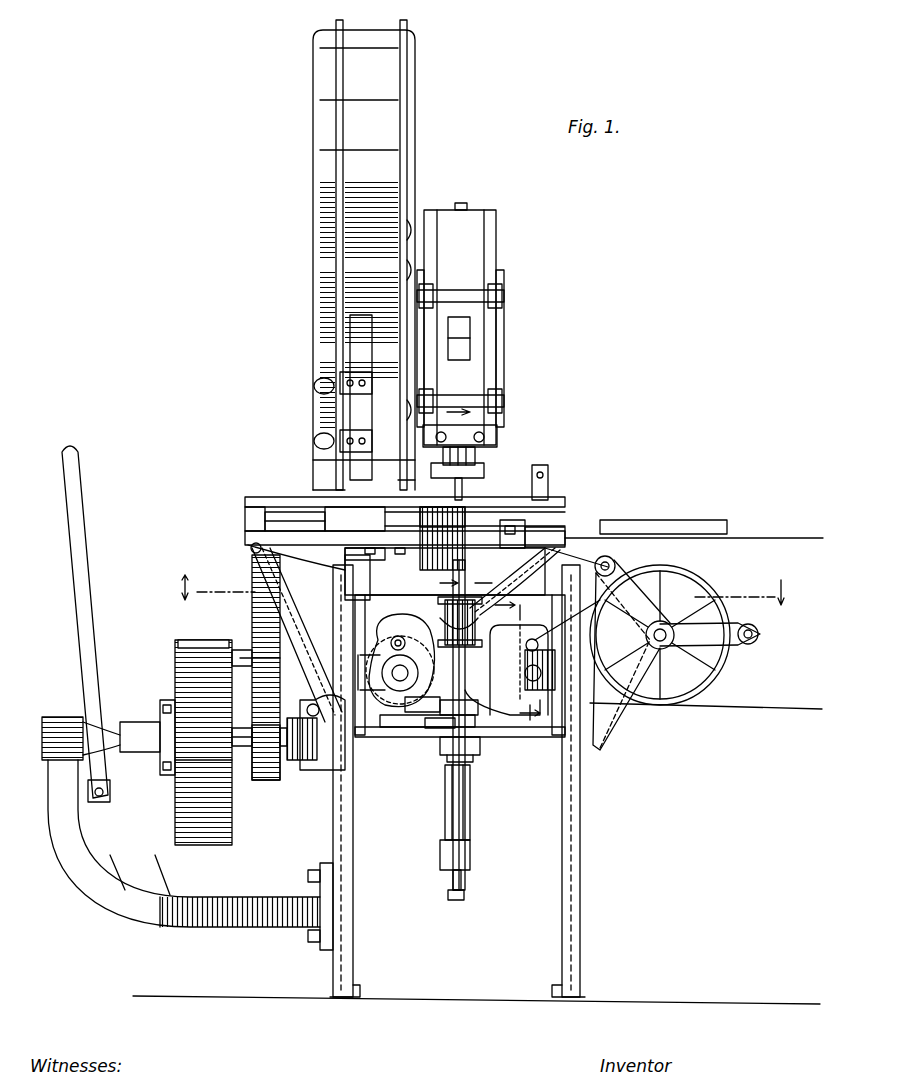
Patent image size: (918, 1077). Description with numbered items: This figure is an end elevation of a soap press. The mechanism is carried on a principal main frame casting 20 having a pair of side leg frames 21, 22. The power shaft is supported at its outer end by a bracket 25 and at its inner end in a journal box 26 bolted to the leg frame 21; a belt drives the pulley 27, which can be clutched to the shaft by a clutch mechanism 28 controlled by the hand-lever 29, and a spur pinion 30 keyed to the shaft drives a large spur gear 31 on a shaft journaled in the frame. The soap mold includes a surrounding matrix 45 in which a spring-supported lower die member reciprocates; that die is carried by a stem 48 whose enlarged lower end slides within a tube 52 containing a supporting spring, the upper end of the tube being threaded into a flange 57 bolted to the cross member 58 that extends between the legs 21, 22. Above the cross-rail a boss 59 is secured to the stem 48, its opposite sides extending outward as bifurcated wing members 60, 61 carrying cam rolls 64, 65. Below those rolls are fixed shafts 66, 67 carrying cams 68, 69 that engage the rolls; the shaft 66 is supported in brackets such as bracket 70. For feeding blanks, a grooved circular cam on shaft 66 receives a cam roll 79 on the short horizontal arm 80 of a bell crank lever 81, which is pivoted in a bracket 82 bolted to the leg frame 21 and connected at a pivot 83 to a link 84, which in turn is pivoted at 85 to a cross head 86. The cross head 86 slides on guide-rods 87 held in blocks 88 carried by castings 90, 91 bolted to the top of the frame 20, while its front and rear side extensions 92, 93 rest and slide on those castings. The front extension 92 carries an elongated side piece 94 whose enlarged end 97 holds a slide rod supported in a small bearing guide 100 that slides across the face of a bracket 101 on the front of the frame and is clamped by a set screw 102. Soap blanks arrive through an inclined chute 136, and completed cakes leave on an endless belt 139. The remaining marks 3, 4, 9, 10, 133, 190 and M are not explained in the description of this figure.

The inclined soap chute 136 is at (345, 130).
The front side extension 92 is at (497, 222).
The rear side extension 93 is at (428, 215).
The elongated side piece 94 is at (430, 345).
The casting 91 is at (458, 328).
The enlarged end 97 is at (480, 465).
The bearing guide 100 is at (478, 500).
The section line 4 is at (466, 483).
The table plate 133 is at (257, 508).
The block 88 is at (250, 518).
The guide-rods 87 is at (272, 520).
The cross head 86 is at (312, 518).
The main frame casting 20 is at (442, 538).
The short horizontal arm 80 is at (375, 748).
The pivotal connection 83 is at (250, 548).
The link 84 is at (268, 575).
The pivotal connection 85 is at (338, 552).
The casting 90 is at (358, 552).
The surrounding matrix 45 is at (540, 490).
The set screw 102 is at (522, 525).
The bracket 101 is at (530, 545).
The endless belt 139 is at (800, 532).
The bifurcated wing member 61 is at (612, 560).
The hand wheel 190 is at (692, 702).
The section line 3 is at (479, 592).
The side leg frame 21 is at (352, 836).
The side leg frame 22 is at (580, 826).
The cross member 58 is at (362, 705).
The cam 69 is at (565, 710).
The vertical shaft 9 is at (462, 776).
The cam 68 is at (448, 630).
The bifurcated wing member 60 is at (440, 628).
The cam roll 64 is at (392, 622).
The bracket 70 is at (390, 643).
The fixed shaft 66 is at (410, 680).
The stem 48 is at (478, 680).
The fixed shaft 67 is at (525, 682).
The cam roll 65 is at (538, 640).
The section line 10 is at (517, 664).
The flange 57 is at (482, 748).
The boss 59 is at (455, 716).
The cam roll 79 is at (428, 712).
The motor M is at (438, 728).
The tube 52 is at (468, 828).
The bell crank lever 81 is at (272, 618).
The spur gear 31 is at (265, 658).
The pulley 27 is at (176, 802).
The clutch mechanism 28 is at (150, 718).
The hand-lever 29 is at (93, 622).
The spur pinion 30 is at (280, 772).
The journal box 26 is at (310, 762).
The bracket 82 is at (345, 760).
The bracket 25 is at (132, 900).